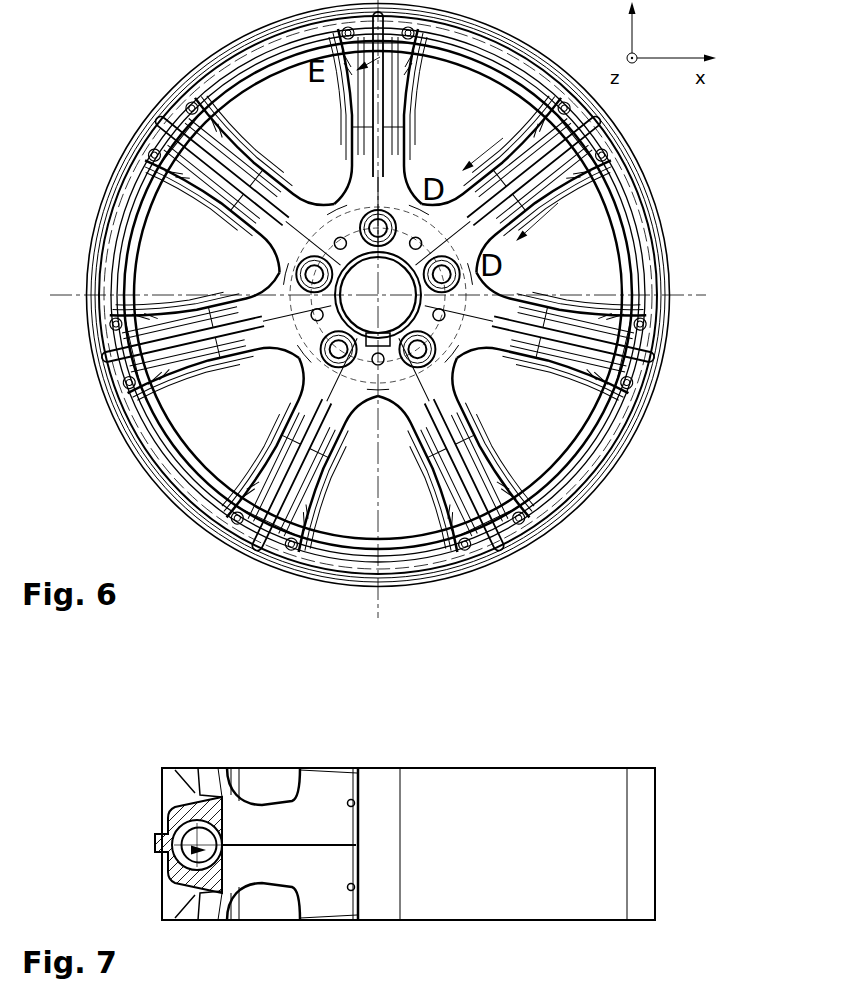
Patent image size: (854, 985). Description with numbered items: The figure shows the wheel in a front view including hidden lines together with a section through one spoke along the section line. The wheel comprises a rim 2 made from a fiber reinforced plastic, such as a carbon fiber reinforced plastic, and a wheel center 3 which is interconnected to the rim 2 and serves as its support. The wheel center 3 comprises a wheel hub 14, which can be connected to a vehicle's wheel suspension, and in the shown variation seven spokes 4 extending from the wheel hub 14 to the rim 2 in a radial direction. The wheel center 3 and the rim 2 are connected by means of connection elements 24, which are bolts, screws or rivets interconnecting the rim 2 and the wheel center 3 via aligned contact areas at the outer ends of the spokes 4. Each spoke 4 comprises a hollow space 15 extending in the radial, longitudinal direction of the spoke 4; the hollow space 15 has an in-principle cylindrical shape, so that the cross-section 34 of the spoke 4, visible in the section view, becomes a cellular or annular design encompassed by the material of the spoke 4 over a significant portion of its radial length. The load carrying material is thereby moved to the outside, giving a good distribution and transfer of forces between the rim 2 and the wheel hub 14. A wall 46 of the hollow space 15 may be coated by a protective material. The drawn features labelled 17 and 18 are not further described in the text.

In FIG. 6, the rim 2 is at (635, 139).
In FIG. 7, the rim 2 is at (537, 812).
In FIG. 6, the wheel center 3 is at (583, 214).
In FIG. 7, the wheel center 3 is at (263, 766).
In FIG. 6, the spoke 4 is at (640, 283).
In FIG. 7, the spoke 4 is at (331, 801).
In FIG. 6, the wheel hub 14 is at (490, 282).
In FIG. 6, the hollow space 15 is at (290, 234).
In FIG. 7, the hollow space 15 is at (160, 827).
In FIG. 6, the window opening 17 is at (273, 343).
In FIG. 6, the hub hole 18 is at (450, 328).
In FIG. 6, the connection element 24 is at (627, 382).
In FIG. 7, the cross-section 34 is at (176, 807).
In FIG. 7, the wall 46 is at (190, 849).